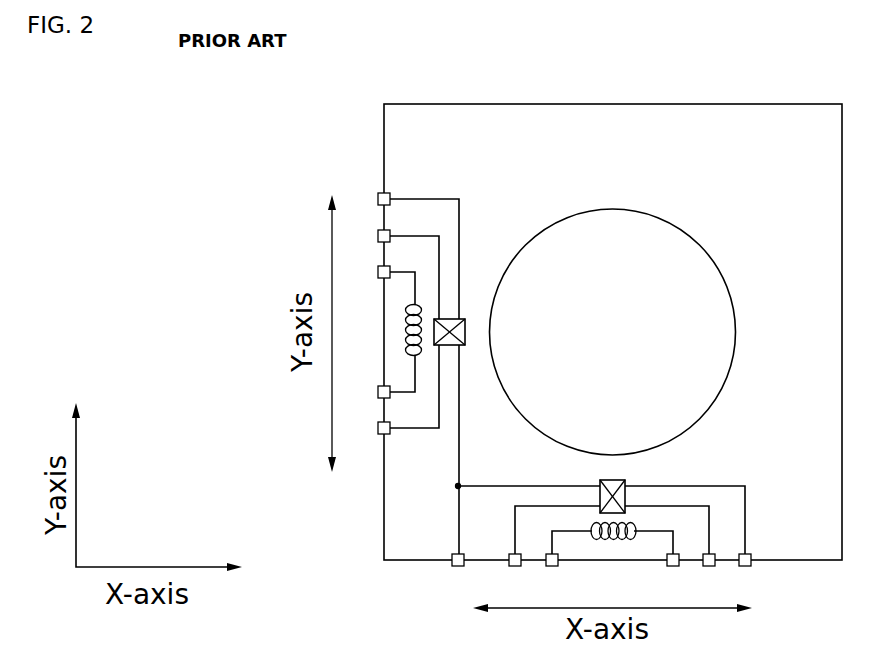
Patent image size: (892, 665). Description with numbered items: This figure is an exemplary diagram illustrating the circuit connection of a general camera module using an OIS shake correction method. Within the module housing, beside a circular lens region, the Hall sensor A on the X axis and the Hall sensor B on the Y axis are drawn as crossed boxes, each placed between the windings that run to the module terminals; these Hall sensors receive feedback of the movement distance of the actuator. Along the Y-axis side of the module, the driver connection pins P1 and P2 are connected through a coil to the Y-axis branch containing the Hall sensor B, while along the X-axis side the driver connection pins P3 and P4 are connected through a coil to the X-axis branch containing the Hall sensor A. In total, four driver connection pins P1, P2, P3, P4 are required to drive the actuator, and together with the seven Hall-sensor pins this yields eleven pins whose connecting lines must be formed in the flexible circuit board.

The Hall sensor on the X axis A is at (642, 478).
The Hall sensor on the Y axis B is at (470, 300).
The driver connection pin P1 is at (367, 275).
The driver connection pin P2 is at (367, 395).
The driver connection pin P3 is at (554, 574).
The driver connection pin P4 is at (670, 574).